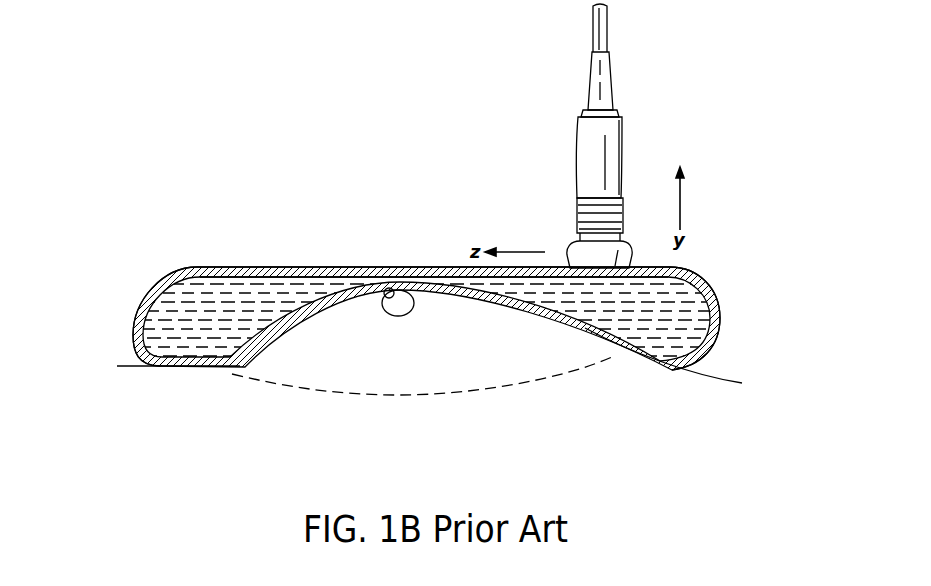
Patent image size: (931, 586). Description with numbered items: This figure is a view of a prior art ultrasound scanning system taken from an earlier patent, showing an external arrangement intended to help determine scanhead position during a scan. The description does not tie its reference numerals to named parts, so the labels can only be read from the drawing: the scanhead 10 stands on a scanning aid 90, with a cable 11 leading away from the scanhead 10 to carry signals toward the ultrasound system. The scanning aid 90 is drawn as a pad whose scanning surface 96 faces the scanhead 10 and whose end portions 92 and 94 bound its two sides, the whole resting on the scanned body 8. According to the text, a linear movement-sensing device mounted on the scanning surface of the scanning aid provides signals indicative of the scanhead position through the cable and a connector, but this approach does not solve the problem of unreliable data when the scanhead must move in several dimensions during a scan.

The patient body surface 8 is at (335, 363).
The ultrasound probe 10 is at (597, 136).
The probe cable 11 is at (613, 82).
The standoff pad 90 is at (436, 285).
The left end wall of pad 92 is at (140, 308).
The right end wall of pad 94 is at (716, 338).
The top layer of pad 96 is at (341, 266).